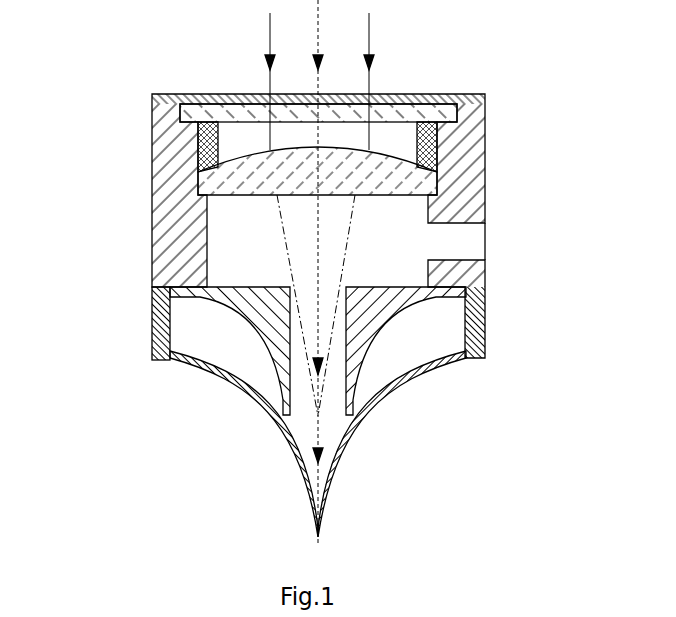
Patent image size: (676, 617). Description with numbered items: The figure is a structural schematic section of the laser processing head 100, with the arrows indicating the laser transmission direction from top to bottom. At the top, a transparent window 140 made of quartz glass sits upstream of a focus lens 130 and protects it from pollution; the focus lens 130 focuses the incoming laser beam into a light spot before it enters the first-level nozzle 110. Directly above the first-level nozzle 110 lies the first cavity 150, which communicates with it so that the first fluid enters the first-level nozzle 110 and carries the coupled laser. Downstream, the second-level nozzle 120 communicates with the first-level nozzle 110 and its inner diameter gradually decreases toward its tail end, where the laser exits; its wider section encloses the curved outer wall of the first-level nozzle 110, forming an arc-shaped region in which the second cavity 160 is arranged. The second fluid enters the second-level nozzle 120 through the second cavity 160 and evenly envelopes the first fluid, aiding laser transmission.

The laser processing head 100 is at (97, 43).
The first-level nozzle 110 is at (174, 220).
The second-level nozzle 120 is at (367, 413).
The focus lens 130 is at (403, 167).
The transparent window 140 is at (390, 112).
The first cavity 150 is at (377, 247).
The second cavity 160 is at (405, 345).